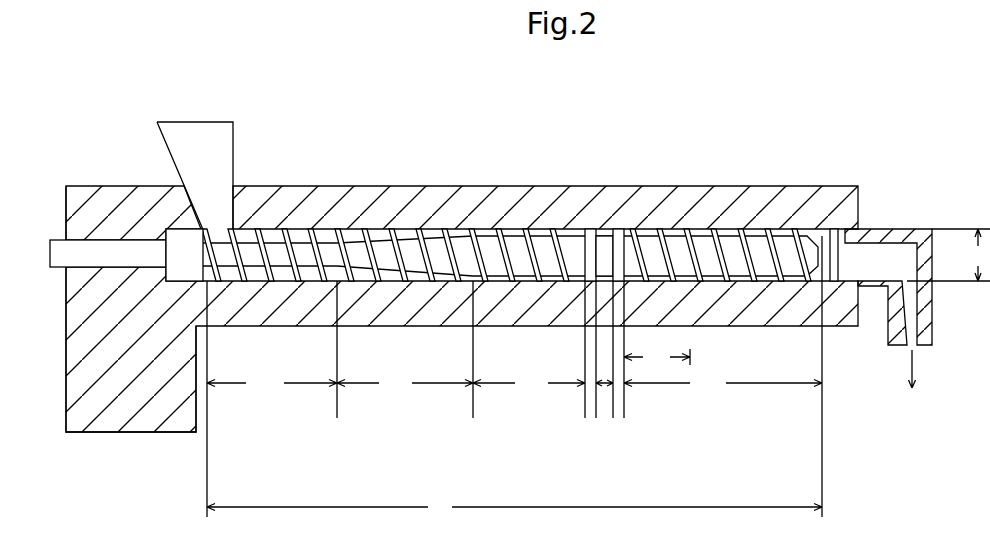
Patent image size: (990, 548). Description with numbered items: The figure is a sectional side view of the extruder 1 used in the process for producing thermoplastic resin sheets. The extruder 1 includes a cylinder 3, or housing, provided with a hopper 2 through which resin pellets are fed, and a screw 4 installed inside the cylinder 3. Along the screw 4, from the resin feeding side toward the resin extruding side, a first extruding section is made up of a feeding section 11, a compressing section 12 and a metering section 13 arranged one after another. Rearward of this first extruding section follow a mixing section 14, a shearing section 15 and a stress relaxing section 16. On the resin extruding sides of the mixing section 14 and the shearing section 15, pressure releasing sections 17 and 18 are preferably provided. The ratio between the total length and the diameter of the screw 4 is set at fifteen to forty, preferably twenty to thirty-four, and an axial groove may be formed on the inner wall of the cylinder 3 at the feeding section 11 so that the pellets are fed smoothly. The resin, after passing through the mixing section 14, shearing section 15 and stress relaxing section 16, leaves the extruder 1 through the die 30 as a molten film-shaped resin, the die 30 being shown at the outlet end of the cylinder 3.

The extruder 1 is at (520, 298).
The hopper 2 is at (234, 134).
The cylinder 3 is at (323, 186).
The screw 4 is at (573, 232).
The feeding section 11 is at (272, 384).
The compressing section 12 is at (405, 384).
The metering section 13 is at (529, 384).
The mixing section 14 is at (585, 418).
The shearing section 15 is at (619, 418).
The stress relaxing section 16 is at (723, 384).
The pressure releasing section 17 is at (604, 418).
The pressure releasing section 18 is at (657, 358).
The die 30 is at (910, 383).